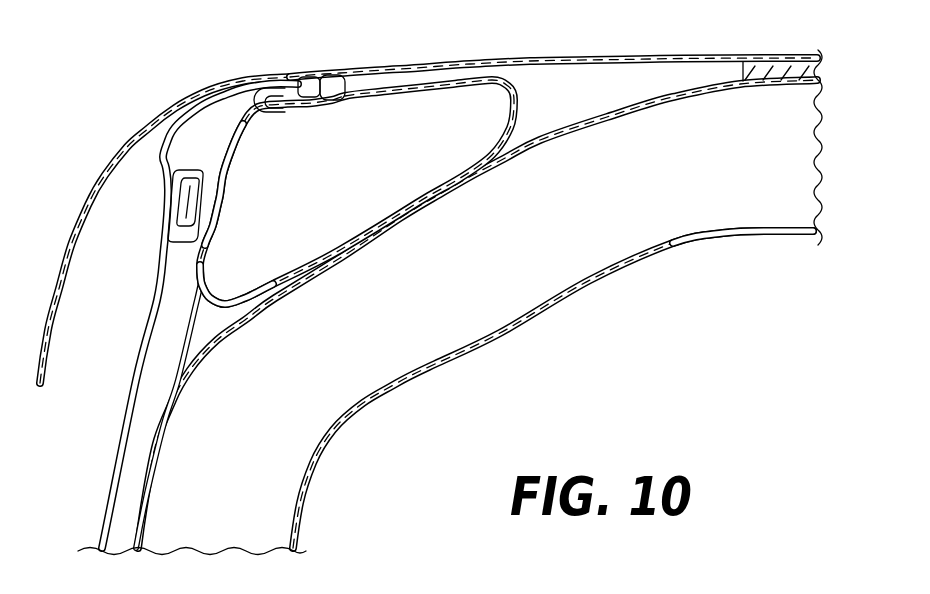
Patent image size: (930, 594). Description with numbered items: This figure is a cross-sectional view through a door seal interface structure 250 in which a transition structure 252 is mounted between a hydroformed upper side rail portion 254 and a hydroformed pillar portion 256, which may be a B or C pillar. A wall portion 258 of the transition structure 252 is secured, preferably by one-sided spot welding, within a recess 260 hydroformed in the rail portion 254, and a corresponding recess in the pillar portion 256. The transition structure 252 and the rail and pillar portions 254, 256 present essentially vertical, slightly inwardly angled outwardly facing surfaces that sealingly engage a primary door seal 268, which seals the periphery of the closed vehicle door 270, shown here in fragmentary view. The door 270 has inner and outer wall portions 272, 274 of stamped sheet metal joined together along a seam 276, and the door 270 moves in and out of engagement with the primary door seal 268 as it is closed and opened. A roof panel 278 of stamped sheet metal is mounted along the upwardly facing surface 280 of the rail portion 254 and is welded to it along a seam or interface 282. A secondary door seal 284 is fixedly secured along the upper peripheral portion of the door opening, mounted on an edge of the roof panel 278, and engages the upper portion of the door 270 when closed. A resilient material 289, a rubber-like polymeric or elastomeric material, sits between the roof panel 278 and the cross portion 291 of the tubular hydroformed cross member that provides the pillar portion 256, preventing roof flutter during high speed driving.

The door seal interface structure 250 is at (166, 349).
The transition structure 252 is at (192, 318).
The hydroformed upper side rail portion 254 is at (215, 287).
The hydroformed pillar portion 256 is at (305, 500).
The wall portion 258 is at (176, 372).
The recess 260 is at (221, 163).
The primary door seal 268 is at (211, 228).
The vehicle door 270 is at (78, 193).
The inner wall portion 272 is at (153, 277).
The outer wall portion 274 is at (78, 235).
The seam 276 is at (292, 75).
The roof panel 278 is at (420, 67).
The upwardly facing surface 280 is at (345, 92).
The seam or interface 282 is at (293, 114).
The secondary door seal 284 is at (335, 97).
The resilient material 289 is at (748, 65).
The cross portion 291 is at (727, 236).